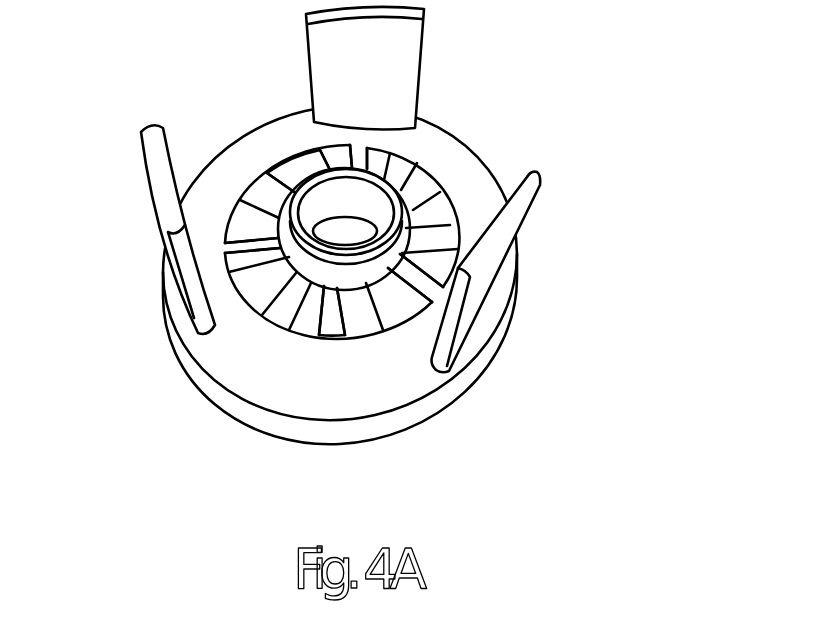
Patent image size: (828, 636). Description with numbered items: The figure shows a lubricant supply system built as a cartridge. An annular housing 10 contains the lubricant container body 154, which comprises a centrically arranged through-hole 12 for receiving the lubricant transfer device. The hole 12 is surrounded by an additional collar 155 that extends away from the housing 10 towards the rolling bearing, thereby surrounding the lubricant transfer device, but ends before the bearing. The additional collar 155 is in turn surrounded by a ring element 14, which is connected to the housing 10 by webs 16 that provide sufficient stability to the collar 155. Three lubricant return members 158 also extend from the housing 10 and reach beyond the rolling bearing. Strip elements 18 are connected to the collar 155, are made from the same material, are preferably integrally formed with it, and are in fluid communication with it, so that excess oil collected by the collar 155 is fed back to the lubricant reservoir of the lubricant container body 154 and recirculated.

The annular housing 10 is at (233, 360).
The through-hole 12 is at (368, 207).
The ring element 14 is at (372, 272).
The webs 16 is at (358, 158).
The strip elements 18 is at (292, 299).
The lubricant container body 154 is at (325, 322).
The additional collar 155 is at (295, 190).
The lubricant return members 158 is at (508, 227).